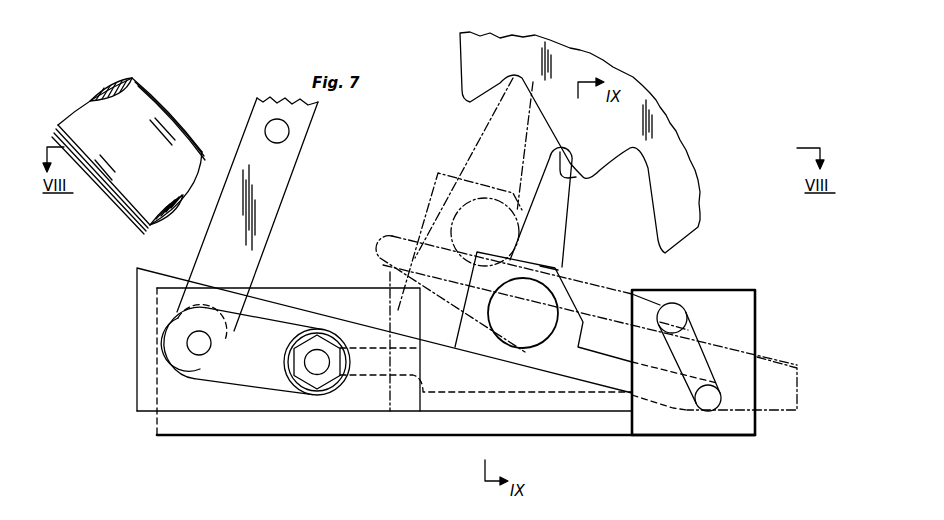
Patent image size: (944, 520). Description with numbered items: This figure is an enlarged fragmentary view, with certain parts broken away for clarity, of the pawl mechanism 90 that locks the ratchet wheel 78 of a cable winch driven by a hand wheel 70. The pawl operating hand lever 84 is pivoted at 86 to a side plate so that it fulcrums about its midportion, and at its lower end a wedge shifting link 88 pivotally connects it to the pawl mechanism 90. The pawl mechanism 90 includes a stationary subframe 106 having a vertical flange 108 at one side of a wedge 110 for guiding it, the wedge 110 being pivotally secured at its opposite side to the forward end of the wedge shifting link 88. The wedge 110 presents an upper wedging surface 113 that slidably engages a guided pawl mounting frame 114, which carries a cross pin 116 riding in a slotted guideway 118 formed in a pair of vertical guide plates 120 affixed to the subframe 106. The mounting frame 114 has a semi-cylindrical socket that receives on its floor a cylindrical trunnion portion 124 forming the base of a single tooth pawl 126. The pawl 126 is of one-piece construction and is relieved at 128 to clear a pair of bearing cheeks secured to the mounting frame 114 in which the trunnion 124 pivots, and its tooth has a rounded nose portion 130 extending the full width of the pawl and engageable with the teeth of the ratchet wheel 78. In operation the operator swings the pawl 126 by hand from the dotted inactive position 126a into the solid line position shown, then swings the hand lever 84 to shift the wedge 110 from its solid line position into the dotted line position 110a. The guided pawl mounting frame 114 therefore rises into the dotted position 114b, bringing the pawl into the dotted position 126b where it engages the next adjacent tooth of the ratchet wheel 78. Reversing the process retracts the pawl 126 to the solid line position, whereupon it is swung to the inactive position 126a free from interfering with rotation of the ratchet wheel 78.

The hand wheel 70 is at (160, 115).
The ratchet wheel 78 is at (650, 165).
The pawl operating hand lever 84 is at (287, 196).
The pivot 86 is at (265, 128).
The wedge shifting link 88 is at (237, 388).
The pawl mechanism 90 is at (202, 438).
The stationary subframe 106 is at (556, 436).
The vertical flange 108 is at (312, 288).
The wedge 110 is at (137, 378).
The dotted line position of wedge 110a is at (383, 273).
The upper wedging surface 113 is at (176, 262).
The guided pawl mounting frame 114 is at (619, 357).
The dotted line position of pawl mounting frame 114b is at (438, 178).
The cross pin 116 is at (737, 379).
The slotted guideway 118 is at (688, 337).
The vertical guide plates 120 is at (717, 274).
The trunnion portion 124 is at (536, 344).
The single tooth pawl 126 is at (560, 233).
The dotted line inactive position of pawl 126a is at (433, 298).
The dotted line engaged position of pawl 126b is at (492, 127).
The relief 128 is at (558, 269).
The rounded nose portion 130 is at (572, 178).